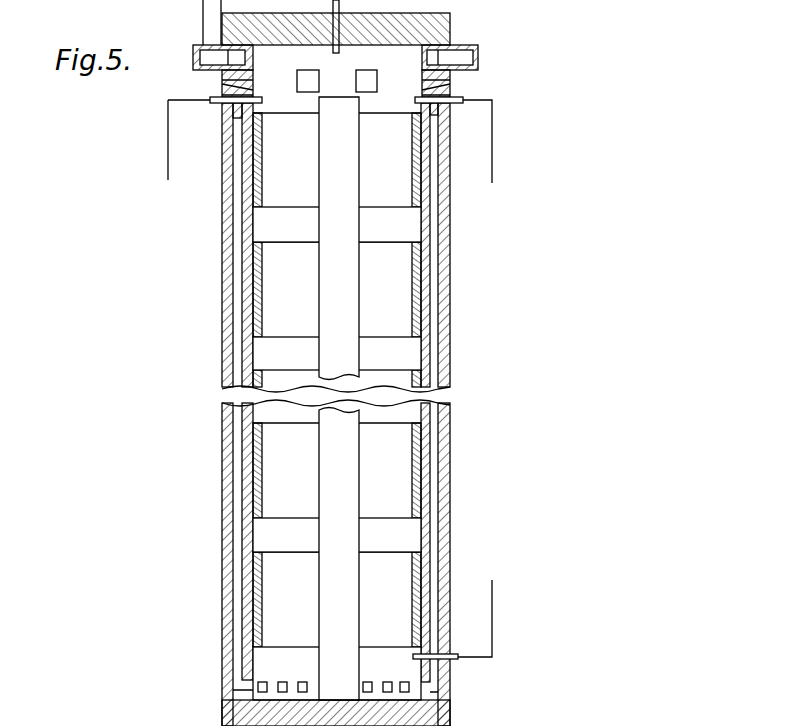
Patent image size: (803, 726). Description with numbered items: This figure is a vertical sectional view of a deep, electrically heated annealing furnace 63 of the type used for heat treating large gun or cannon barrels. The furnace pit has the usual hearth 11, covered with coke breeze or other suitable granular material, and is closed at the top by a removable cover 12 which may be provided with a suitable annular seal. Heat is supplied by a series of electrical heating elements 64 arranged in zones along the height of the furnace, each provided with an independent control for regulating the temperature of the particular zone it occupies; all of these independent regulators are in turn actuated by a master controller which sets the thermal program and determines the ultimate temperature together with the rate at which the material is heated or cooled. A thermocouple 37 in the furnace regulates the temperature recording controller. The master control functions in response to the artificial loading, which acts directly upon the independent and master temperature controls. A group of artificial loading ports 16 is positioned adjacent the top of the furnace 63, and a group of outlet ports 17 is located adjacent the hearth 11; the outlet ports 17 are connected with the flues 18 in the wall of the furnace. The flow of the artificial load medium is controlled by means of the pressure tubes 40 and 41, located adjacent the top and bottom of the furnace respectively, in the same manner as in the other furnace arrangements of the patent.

The hearth 11 is at (270, 697).
The removable cover 12 is at (430, 28).
The artificial loading ports 16 is at (297, 80).
The outlet ports 17 is at (284, 672).
The flues 18 is at (433, 147).
The thermocouple 37 is at (218, 104).
The pressure tube 40 is at (462, 100).
The pressure tube 41 is at (458, 659).
The electrical heat treating furnace 63 is at (222, 297).
The electrical heating elements 64 is at (337, 380).